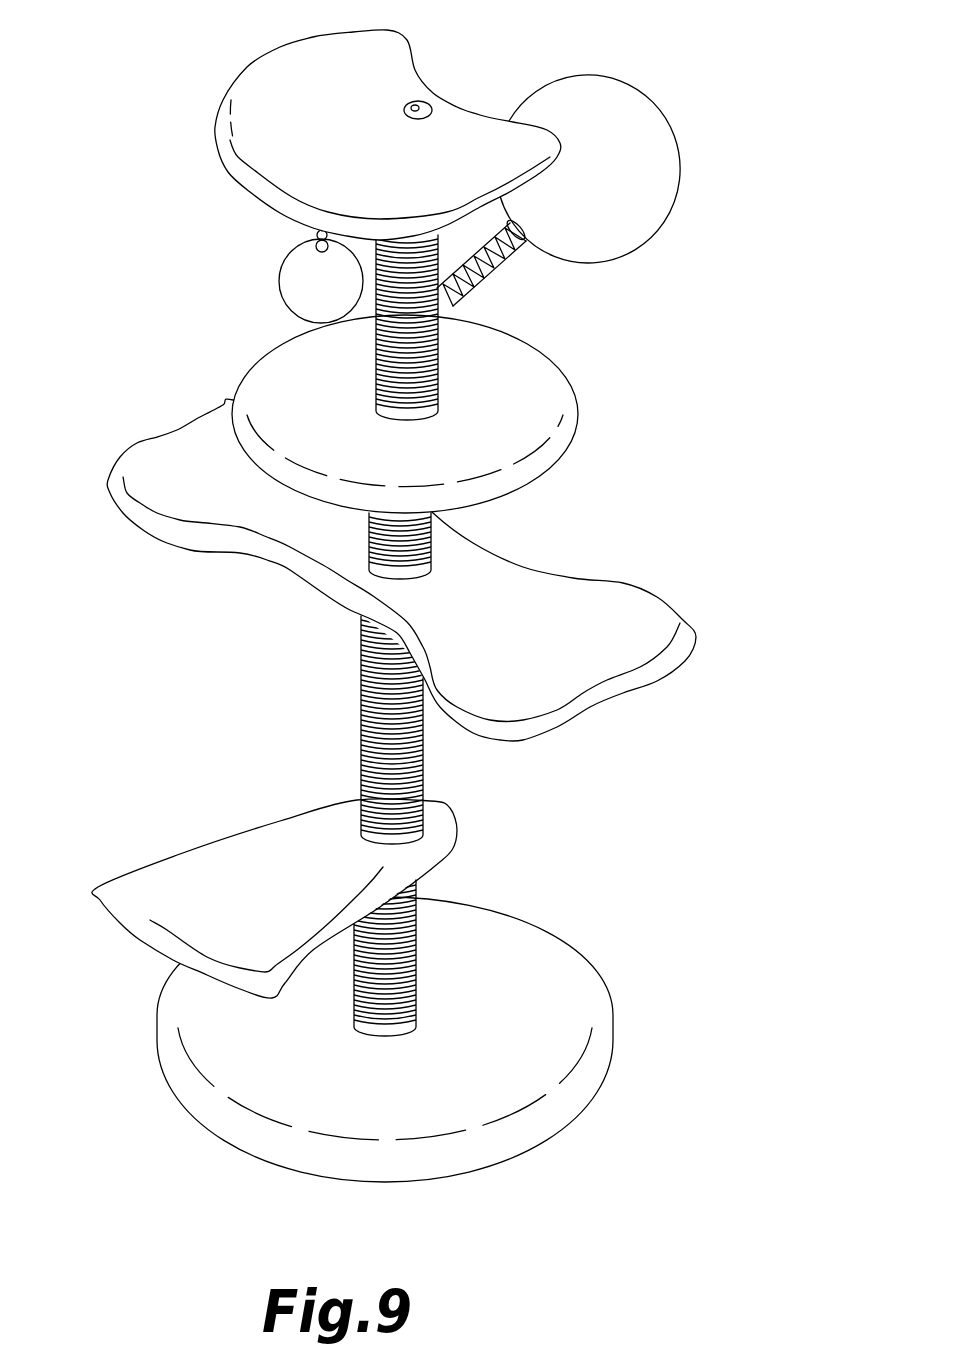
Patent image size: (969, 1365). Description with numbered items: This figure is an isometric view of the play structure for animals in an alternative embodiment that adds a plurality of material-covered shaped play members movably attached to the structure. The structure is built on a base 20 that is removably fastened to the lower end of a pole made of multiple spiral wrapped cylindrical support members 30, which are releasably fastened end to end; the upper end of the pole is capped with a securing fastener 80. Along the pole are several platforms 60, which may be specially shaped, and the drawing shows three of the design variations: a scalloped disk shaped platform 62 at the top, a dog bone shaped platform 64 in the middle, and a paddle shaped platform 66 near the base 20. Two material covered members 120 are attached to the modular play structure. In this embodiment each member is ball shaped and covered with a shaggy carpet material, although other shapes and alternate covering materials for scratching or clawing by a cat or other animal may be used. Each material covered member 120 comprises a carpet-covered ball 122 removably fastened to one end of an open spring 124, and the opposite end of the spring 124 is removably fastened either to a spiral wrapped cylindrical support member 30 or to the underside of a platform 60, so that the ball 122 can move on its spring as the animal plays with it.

The base 20 is at (567, 970).
The multiple spiral wrapped cylindrical support member 30 is at (440, 360).
The platform 60 is at (548, 382).
The scalloped disk shaped platform 62 is at (388, 123).
The dog bone shaped platform 64 is at (683, 612).
The paddle shaped platform 66 is at (180, 853).
The securing fastener 80 is at (424, 102).
The material covered member 120 is at (465, 212).
The carpet-covered ball 122 is at (672, 213).
The open spring 124 is at (503, 268).